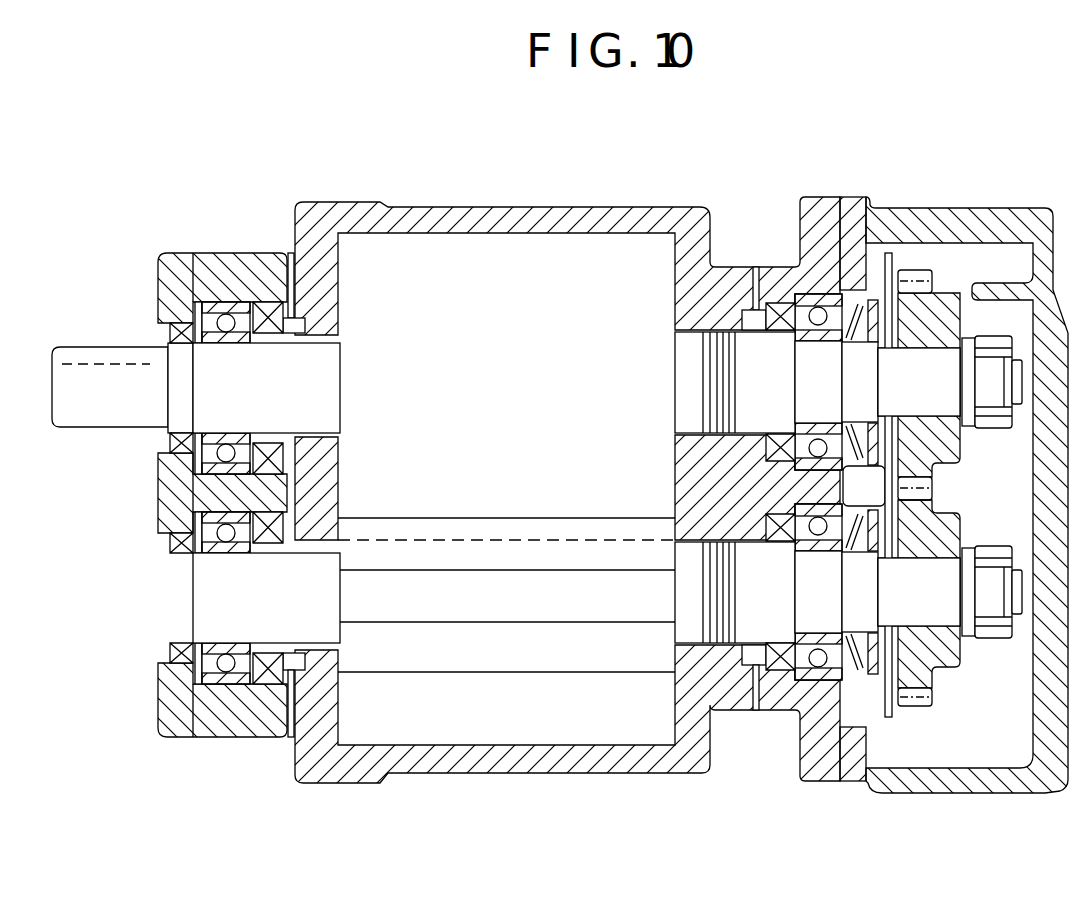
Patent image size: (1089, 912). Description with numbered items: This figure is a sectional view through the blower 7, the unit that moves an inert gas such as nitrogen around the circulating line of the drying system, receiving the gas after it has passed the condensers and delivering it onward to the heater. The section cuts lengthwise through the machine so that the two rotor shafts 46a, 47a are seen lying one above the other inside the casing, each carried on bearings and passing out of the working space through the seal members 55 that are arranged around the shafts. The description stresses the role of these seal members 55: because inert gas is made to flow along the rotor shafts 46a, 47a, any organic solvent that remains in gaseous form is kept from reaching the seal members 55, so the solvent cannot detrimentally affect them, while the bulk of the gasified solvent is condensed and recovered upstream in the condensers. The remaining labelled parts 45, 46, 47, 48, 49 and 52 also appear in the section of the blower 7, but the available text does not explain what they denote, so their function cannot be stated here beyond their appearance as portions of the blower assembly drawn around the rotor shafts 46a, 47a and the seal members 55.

The blower 7 is at (1028, 806).
The casing 45 is at (585, 206).
The male rotor 46 is at (542, 398).
The rotor shaft 46a is at (858, 350).
The female rotor 47 is at (532, 662).
The rotor shaft 47a is at (873, 627).
The timing gear 48 is at (948, 300).
The timing gear 49 is at (945, 672).
The pin 52 is at (290, 253).
The seal member 55 is at (272, 334).